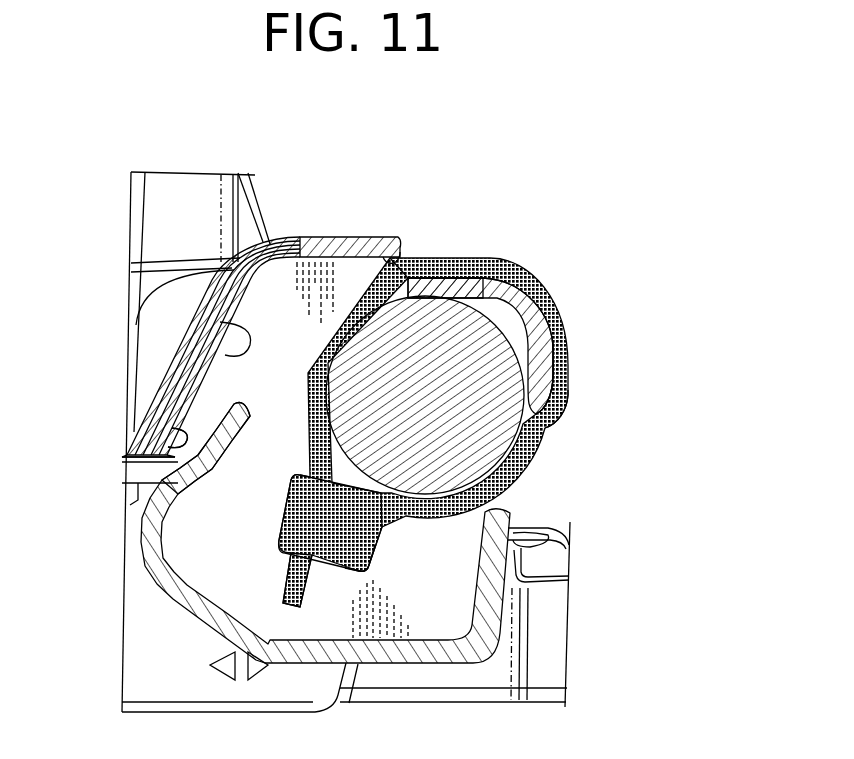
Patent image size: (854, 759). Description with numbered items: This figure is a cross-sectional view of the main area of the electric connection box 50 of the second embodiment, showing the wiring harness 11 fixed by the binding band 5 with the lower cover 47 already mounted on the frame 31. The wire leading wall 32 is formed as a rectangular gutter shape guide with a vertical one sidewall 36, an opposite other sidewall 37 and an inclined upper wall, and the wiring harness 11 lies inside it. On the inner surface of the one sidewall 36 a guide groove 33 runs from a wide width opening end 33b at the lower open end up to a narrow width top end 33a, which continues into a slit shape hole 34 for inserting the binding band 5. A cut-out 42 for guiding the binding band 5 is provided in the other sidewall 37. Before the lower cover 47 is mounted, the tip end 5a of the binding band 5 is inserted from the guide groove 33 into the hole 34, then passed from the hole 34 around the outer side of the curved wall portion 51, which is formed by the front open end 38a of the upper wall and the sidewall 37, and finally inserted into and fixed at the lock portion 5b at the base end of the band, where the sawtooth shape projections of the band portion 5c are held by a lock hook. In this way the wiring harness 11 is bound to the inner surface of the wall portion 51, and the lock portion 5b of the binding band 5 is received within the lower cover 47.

The binding band 5 is at (510, 259).
The tip end 5a is at (290, 567).
The lock portion 5b is at (377, 554).
The band portion 5c is at (307, 438).
The wiring harness 11 is at (484, 434).
The frame 31 is at (263, 214).
The wire leading wall 32 is at (357, 234).
The guide groove 33 is at (218, 319).
The top end 33a is at (393, 255).
The opening end 33b is at (165, 438).
The hole 34 is at (410, 265).
The one sidewall 36 is at (200, 378).
The other sidewall 37 is at (556, 364).
The front open end 38a is at (466, 287).
The cut-out 42 is at (549, 421).
The lower cover 47 is at (477, 665).
The electric connection box 50 is at (719, 289).
The curved wall portion 51 is at (549, 292).